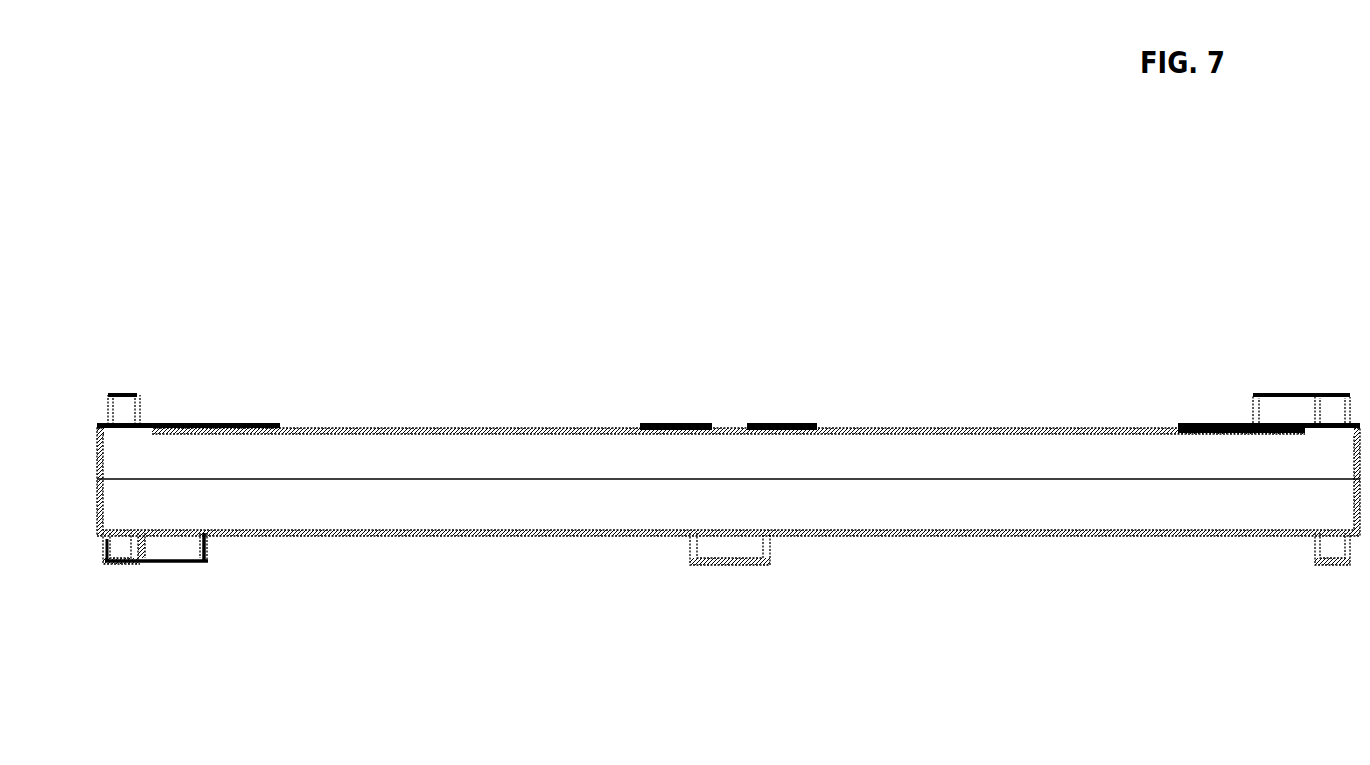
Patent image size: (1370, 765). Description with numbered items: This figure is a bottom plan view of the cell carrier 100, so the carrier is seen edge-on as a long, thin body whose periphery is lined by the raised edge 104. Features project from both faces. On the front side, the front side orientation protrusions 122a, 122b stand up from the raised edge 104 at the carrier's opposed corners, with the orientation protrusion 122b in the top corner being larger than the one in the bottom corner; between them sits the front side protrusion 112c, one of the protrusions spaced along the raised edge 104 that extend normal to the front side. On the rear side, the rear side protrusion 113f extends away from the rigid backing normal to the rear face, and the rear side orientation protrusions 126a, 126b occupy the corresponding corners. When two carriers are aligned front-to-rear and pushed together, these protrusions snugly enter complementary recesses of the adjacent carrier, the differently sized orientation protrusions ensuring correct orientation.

The cell carrier 100 is at (794, 268).
The raised edge 104 is at (983, 463).
The front side orientation protrusion 122a is at (124, 394).
The front side orientation protrusion 122b is at (1282, 408).
The front side protrusion 112c is at (1333, 420).
The rear side protrusion 113f is at (127, 545).
The rear side orientation protrusion 126b is at (158, 545).
The rear side orientation protrusion 126a is at (1333, 540).